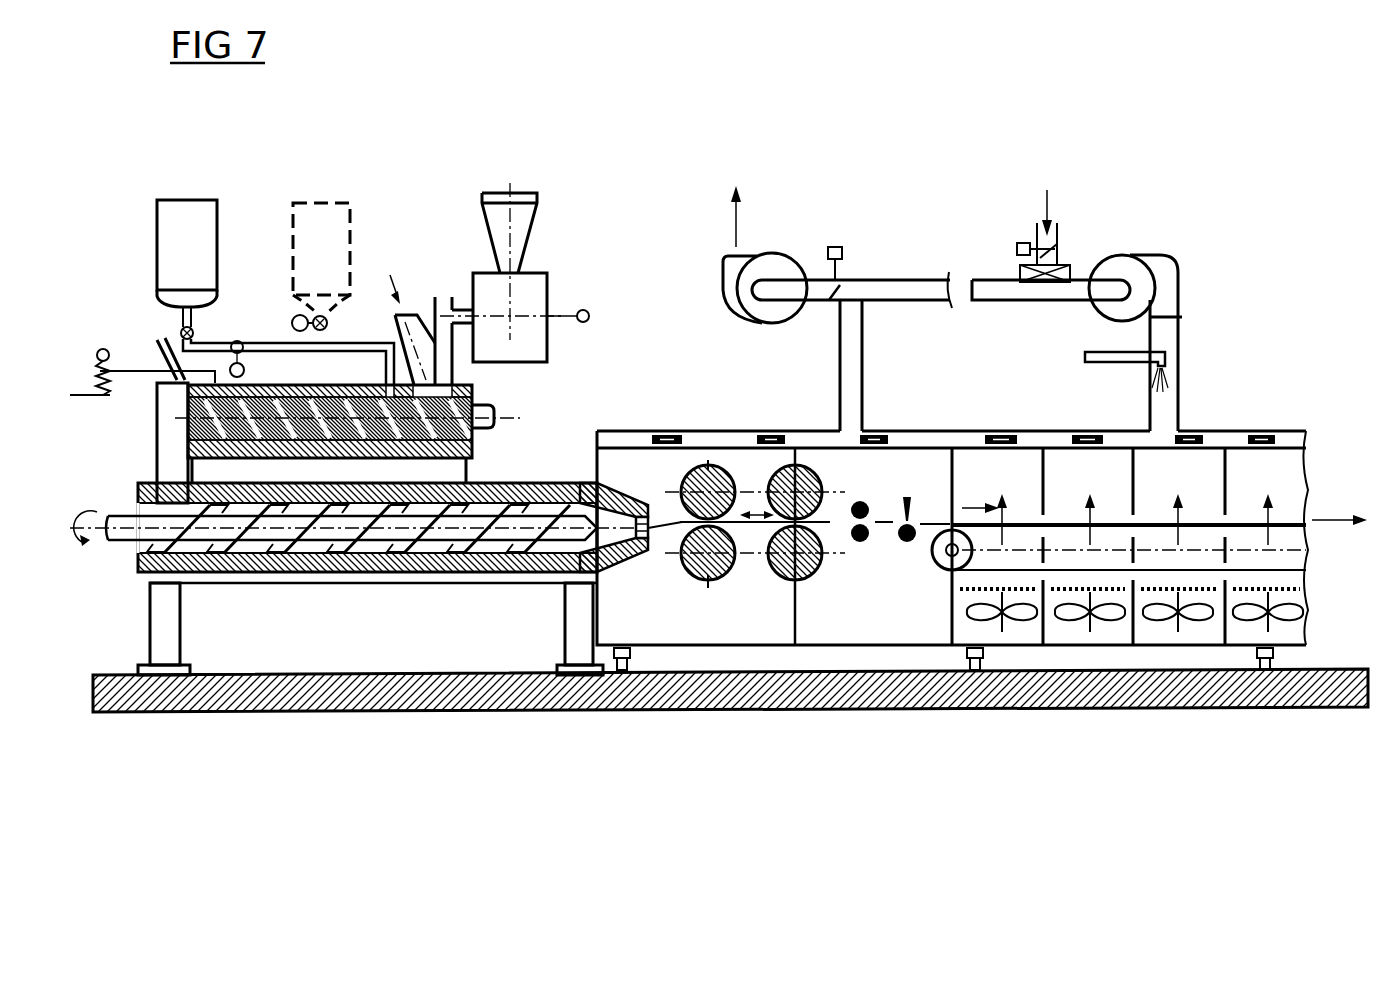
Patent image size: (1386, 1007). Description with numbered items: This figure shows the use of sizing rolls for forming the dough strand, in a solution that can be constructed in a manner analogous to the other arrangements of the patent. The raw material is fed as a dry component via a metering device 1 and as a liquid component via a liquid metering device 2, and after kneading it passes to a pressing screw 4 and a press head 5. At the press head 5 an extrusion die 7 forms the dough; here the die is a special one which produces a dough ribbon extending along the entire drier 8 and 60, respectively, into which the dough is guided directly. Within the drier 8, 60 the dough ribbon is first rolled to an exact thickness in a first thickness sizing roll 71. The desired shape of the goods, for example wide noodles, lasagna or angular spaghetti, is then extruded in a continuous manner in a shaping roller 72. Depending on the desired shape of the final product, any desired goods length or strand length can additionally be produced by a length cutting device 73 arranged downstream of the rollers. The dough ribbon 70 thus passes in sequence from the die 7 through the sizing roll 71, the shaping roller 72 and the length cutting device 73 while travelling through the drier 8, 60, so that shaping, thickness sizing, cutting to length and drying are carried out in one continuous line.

The metering device 1 is at (543, 290).
The liquid metering device 2 is at (199, 268).
The pressing screw 4 is at (403, 567).
The press head 5 is at (608, 487).
The extrusion die 7 is at (650, 520).
The extruded strand 70 is at (662, 527).
The first thickness sizing roll 71 is at (703, 580).
The shaping roller 72 is at (817, 570).
The length cutting device 73 is at (902, 547).
The drier 8 is at (730, 721).
The drier 60 is at (1006, 710).